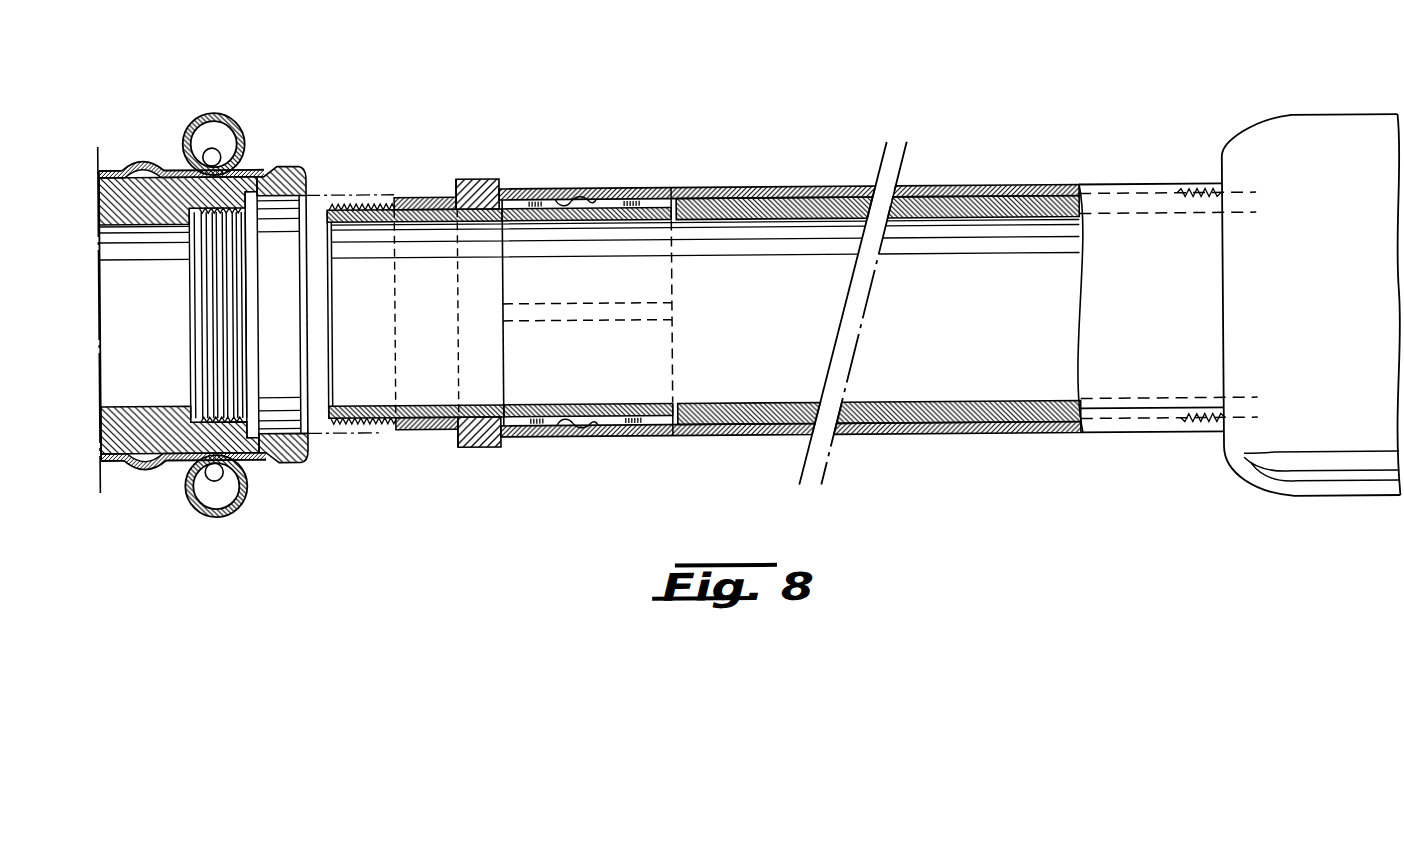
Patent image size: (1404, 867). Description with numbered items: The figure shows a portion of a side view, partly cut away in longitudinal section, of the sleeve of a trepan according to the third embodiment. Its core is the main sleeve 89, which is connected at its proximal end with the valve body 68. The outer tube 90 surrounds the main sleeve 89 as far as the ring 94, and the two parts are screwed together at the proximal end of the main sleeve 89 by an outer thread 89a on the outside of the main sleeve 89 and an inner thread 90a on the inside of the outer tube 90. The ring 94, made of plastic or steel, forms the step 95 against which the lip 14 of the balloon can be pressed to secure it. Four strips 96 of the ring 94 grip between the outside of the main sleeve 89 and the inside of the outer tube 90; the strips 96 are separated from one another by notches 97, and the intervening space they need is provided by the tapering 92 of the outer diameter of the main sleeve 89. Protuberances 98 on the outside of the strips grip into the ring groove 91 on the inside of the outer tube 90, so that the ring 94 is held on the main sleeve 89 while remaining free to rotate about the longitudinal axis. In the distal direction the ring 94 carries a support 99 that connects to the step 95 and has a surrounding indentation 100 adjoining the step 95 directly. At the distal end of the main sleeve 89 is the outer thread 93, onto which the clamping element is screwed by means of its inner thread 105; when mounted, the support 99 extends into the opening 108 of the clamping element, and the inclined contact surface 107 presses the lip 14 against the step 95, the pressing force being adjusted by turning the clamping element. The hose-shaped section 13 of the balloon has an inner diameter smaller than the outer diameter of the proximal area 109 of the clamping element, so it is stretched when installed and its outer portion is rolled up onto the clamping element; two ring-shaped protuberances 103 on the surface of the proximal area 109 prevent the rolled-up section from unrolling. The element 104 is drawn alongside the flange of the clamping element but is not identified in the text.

The hose-shaped section 13 is at (108, 170).
The ring-shaped protuberance 103 is at (152, 168).
The lip 14 is at (220, 144).
The flange 104 is at (298, 170).
The contact surface 107 is at (312, 190).
The support 99 is at (414, 199).
The surrounding indentation 100 is at (443, 199).
The step 95 is at (453, 194).
The ring 94 is at (488, 176).
The protuberances 98 is at (572, 199).
The ring groove 91 is at (595, 201).
The notches 97 is at (663, 317).
The outer tube 90 is at (815, 193).
The main sleeve 89 is at (805, 224).
The tapering 92 is at (560, 221).
The strips 96 is at (657, 368).
The outer thread 93 is at (372, 422).
The opening 108 is at (303, 420).
The inner thread 105 is at (243, 427).
The proximal area 109 is at (145, 497).
The inner thread 90a is at (1203, 192).
The outer thread 89a is at (1185, 208).
The valve body 68 is at (1308, 149).